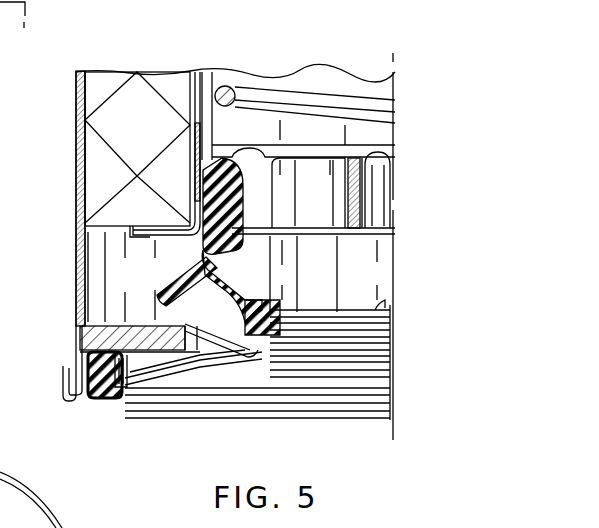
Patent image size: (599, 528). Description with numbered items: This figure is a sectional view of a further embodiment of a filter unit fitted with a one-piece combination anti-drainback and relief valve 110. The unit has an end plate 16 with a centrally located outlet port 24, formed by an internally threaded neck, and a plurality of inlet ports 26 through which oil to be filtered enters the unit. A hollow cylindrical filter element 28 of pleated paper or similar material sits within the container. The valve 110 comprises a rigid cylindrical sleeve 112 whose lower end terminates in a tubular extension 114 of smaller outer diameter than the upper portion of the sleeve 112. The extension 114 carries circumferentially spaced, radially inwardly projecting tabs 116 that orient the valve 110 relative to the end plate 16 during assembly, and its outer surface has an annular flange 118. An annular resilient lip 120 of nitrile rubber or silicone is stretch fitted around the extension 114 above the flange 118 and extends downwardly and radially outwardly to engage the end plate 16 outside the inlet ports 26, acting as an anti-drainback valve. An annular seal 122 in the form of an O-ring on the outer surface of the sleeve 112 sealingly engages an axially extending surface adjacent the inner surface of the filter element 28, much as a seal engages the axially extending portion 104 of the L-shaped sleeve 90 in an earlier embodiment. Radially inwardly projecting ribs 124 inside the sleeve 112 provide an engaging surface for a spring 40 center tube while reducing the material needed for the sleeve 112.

The end plate 16 is at (92, 341).
The outlet port 24 is at (372, 310).
The inlet ports 26 is at (193, 362).
The filter element 28 is at (104, 116).
The spring 40 is at (295, 101).
The L-shaped sleeve 90 is at (144, 237).
The axially extending portion 104 is at (197, 148).
The combination anti-drainback and relief valve 110 is at (272, 254).
The sleeve 112 is at (228, 203).
The tubular extension 114 is at (258, 285).
The tabs 116 is at (276, 345).
The annular flange 118 is at (222, 322).
The resilient lip 120 is at (180, 302).
The annular seal 122 is at (195, 205).
The ribs 124 is at (367, 178).